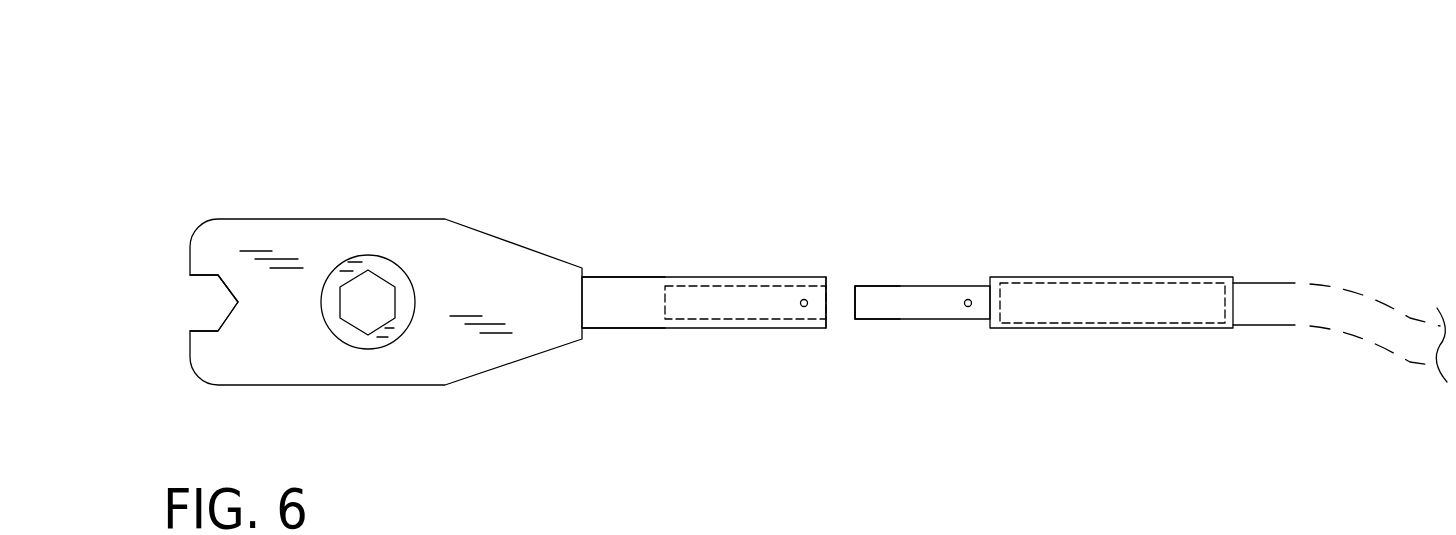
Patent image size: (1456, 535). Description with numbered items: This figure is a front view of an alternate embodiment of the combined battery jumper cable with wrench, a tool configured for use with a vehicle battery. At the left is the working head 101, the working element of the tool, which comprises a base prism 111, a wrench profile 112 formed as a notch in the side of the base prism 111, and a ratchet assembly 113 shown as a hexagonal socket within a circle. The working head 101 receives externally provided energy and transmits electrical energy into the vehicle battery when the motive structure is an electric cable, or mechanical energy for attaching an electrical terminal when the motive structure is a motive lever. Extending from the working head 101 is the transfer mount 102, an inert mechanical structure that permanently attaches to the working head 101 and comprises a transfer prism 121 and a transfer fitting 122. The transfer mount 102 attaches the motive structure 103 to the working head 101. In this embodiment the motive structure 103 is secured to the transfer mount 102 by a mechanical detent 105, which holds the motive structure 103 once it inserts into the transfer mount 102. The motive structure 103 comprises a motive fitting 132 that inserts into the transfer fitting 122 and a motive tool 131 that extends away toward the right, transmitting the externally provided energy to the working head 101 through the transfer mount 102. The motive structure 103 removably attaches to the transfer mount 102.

The working head 101 is at (263, 158).
The base prism 111 is at (432, 258).
The wrench profile 112 is at (206, 306).
The ratchet assembly 113 is at (368, 302).
The transfer mount 102 is at (686, 348).
The transfer prism 121 is at (620, 307).
The transfer fitting 122 is at (742, 300).
The mechanical detent 105 is at (971, 172).
The motive structure 103 is at (1257, 255).
The motive fitting 132 is at (889, 295).
The motive tool 131 is at (1042, 297).